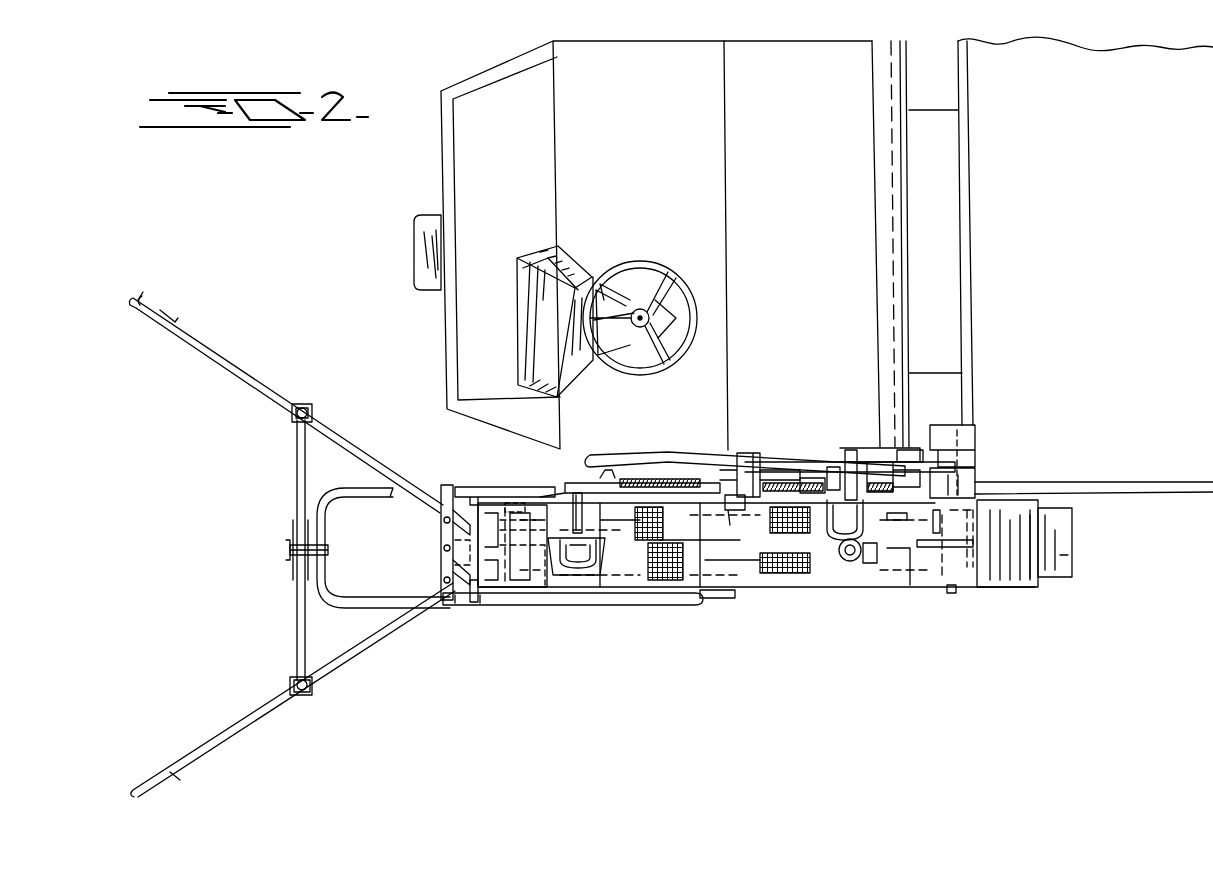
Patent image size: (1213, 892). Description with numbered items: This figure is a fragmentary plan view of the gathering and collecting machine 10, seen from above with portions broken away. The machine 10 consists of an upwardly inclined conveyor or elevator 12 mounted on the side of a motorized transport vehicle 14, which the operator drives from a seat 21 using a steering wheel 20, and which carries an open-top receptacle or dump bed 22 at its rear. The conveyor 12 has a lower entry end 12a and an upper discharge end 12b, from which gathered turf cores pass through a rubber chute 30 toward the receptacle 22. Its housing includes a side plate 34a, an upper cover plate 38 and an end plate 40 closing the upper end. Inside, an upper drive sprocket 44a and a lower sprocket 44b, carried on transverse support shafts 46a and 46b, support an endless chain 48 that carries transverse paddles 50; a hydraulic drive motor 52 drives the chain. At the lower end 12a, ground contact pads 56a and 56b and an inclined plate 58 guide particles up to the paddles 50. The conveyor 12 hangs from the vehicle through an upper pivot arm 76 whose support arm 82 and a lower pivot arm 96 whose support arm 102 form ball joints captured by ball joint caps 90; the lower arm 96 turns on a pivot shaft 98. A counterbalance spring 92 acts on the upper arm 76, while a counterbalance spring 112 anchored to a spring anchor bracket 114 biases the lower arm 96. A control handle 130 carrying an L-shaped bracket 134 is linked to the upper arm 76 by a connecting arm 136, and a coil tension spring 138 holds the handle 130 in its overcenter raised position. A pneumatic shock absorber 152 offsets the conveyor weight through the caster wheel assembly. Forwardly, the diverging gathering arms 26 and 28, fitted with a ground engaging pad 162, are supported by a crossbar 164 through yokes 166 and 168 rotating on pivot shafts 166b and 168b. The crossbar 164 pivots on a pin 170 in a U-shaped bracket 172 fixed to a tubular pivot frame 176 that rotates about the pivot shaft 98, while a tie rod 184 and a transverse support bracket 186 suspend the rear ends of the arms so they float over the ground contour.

The machine 10 is at (1072, 656).
The conveyor 12 is at (763, 596).
The lower entry end 12a is at (488, 595).
The upper discharge end 12b is at (1023, 588).
The transport vehicle 14 is at (428, 186).
The steering wheel 20 is at (630, 270).
The seat 21 is at (740, 106).
The receptacle 22 is at (1150, 490).
The gathering arm 26 is at (232, 720).
The gathering arm 28 is at (205, 342).
The chute 30 is at (1060, 562).
The side plate 34a is at (735, 598).
The upper cover plate 38 is at (795, 578).
The end plate 40 is at (1032, 580).
The upper drive sprocket 44a is at (965, 550).
The lower sprocket 44b is at (508, 590).
The upper support shaft 46a is at (950, 590).
The lower support shaft 46b is at (515, 503).
The endless chain 48 is at (910, 583).
The paddles 50 is at (462, 550).
The hydraulic drive motor 52 is at (975, 436).
The ground contact pad 56a is at (472, 590).
The ground contact pad 56b is at (480, 497).
The inclined plate 58 is at (548, 580).
The upper pivot arm 76 is at (882, 478).
The support arm 82 is at (833, 483).
The ball joint caps 90 is at (572, 572).
The counterbalance coil tension spring 92 is at (805, 483).
The lower pivot arm 96 is at (593, 488).
The pivot shaft 98 is at (698, 604).
The support arm 102 is at (577, 510).
The counterbalance spring 112 is at (642, 480).
The spring anchor bracket 114 is at (763, 467).
The control handle 130 is at (602, 457).
The L-shaped bracket 134 is at (728, 470).
The connecting arm 136 is at (793, 462).
The coil tension spring 138 is at (738, 498).
The pneumatic shock absorber 152 is at (850, 578).
The ground engaging pad 162 is at (440, 492).
The crossbar 164 is at (297, 640).
The yoke 166 is at (304, 694).
The pivot shaft 166b is at (310, 688).
The yoke 168 is at (304, 404).
The pivot shaft 168b is at (310, 406).
The pivot pin 170 is at (290, 547).
The U-shaped bracket 172 is at (290, 566).
The tubular pivot frame 176 is at (365, 606).
The tie rod 184 is at (440, 553).
The transverse support bracket 186 is at (440, 540).